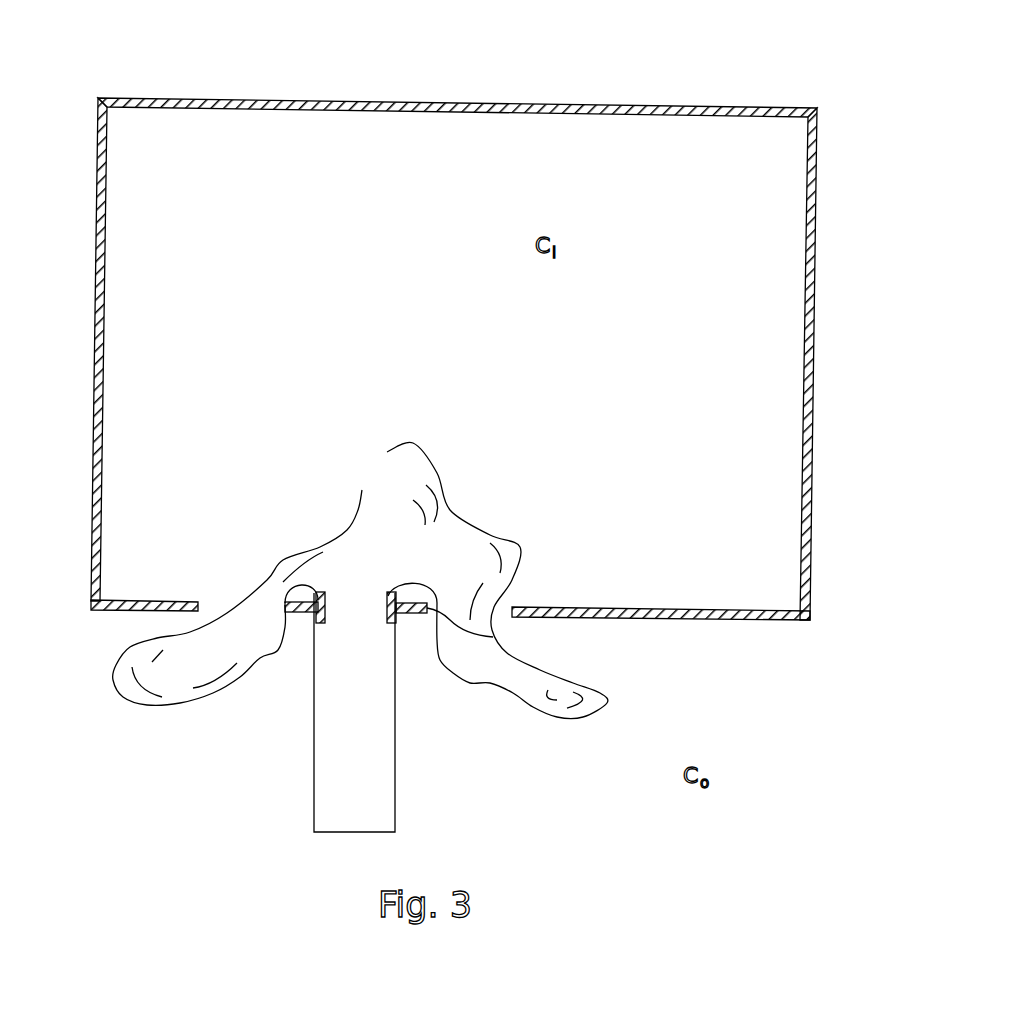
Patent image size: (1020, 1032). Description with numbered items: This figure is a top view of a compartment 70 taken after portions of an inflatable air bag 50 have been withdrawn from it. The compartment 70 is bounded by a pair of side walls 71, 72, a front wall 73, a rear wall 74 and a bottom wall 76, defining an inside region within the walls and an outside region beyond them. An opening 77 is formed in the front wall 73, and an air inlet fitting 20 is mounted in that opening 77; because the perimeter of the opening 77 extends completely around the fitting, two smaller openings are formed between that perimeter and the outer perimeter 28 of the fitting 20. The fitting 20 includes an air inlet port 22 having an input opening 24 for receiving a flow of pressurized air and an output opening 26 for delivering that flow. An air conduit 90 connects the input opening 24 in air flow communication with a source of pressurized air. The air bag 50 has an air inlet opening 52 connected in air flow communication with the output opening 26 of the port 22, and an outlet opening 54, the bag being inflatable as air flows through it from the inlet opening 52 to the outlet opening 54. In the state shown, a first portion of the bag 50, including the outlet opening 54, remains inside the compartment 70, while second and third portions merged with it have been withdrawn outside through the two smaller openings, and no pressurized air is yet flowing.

The compartment 70 is at (457, 338).
The side wall 71 is at (96, 253).
The side wall 72 is at (816, 296).
The front wall 73 is at (712, 620).
The rear wall 74 is at (365, 98).
The bottom wall 76 is at (354, 273).
The opening 77 is at (583, 551).
The inflatable air bag 50 is at (453, 503).
The outlet opening 54 is at (362, 459).
The output opening 26 is at (343, 580).
The air inlet opening 52 is at (356, 607).
The air inlet port 22 is at (322, 600).
The air inlet fitting 20 is at (407, 614).
The input opening 24 is at (353, 633).
The outer perimeter 28 is at (493, 637).
The air conduit 90 is at (327, 781).